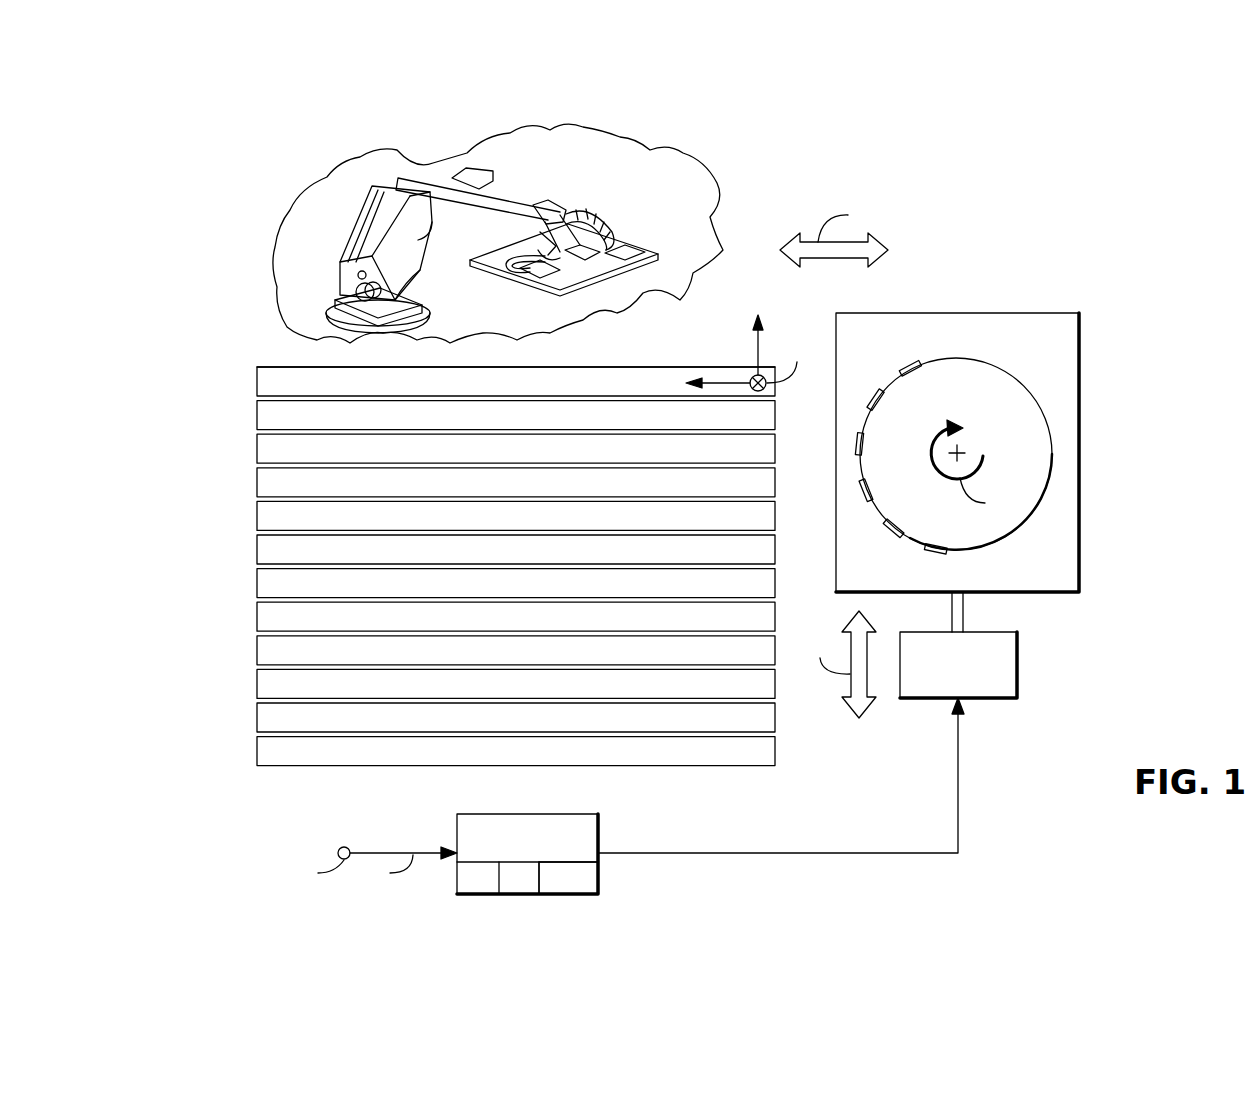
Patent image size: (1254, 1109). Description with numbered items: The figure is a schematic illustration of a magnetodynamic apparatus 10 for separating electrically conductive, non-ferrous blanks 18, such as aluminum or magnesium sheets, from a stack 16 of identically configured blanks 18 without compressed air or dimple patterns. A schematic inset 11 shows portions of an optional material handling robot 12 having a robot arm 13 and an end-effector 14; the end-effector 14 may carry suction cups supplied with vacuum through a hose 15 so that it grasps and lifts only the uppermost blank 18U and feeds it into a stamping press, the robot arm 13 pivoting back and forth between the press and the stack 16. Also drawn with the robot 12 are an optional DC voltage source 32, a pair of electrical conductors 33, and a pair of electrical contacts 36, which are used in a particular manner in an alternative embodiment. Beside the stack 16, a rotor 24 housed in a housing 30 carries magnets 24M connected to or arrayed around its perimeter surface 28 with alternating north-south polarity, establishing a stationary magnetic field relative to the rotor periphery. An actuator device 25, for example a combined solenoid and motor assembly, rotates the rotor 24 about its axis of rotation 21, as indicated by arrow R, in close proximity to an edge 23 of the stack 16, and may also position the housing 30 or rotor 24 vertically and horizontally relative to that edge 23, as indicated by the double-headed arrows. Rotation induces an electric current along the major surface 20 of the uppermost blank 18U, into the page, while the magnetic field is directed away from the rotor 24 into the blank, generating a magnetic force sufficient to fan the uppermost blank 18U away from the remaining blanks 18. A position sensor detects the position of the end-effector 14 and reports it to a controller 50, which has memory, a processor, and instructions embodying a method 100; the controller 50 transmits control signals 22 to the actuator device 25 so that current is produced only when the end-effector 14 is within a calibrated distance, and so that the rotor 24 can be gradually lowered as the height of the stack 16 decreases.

The magnetodynamic apparatus 10 is at (1046, 148).
The schematic inset 11 is at (660, 150).
The material handling robot 12 is at (586, 149).
The robot arm 13 is at (320, 228).
The end-effector 14 is at (640, 252).
The hose 15 is at (595, 232).
The stack 16 is at (214, 577).
The blanks 18 is at (268, 418).
The uppermost blank 18U is at (633, 344).
The major surface 20 is at (258, 360).
The axis of rotation 21 is at (965, 450).
The control signals 22 is at (748, 853).
The edge 23 is at (775, 752).
The rotor 24 is at (963, 375).
The magnets 24M is at (876, 396).
The actuator device 25 is at (958, 645).
The perimeter surface 28 is at (1053, 453).
The housing 30 is at (977, 436).
The DC voltage source 32 is at (540, 236).
The electrical conductors 33 is at (588, 238).
The electrical contacts 36 is at (625, 252).
The controller 50 is at (527, 854).
The method 100 is at (568, 878).